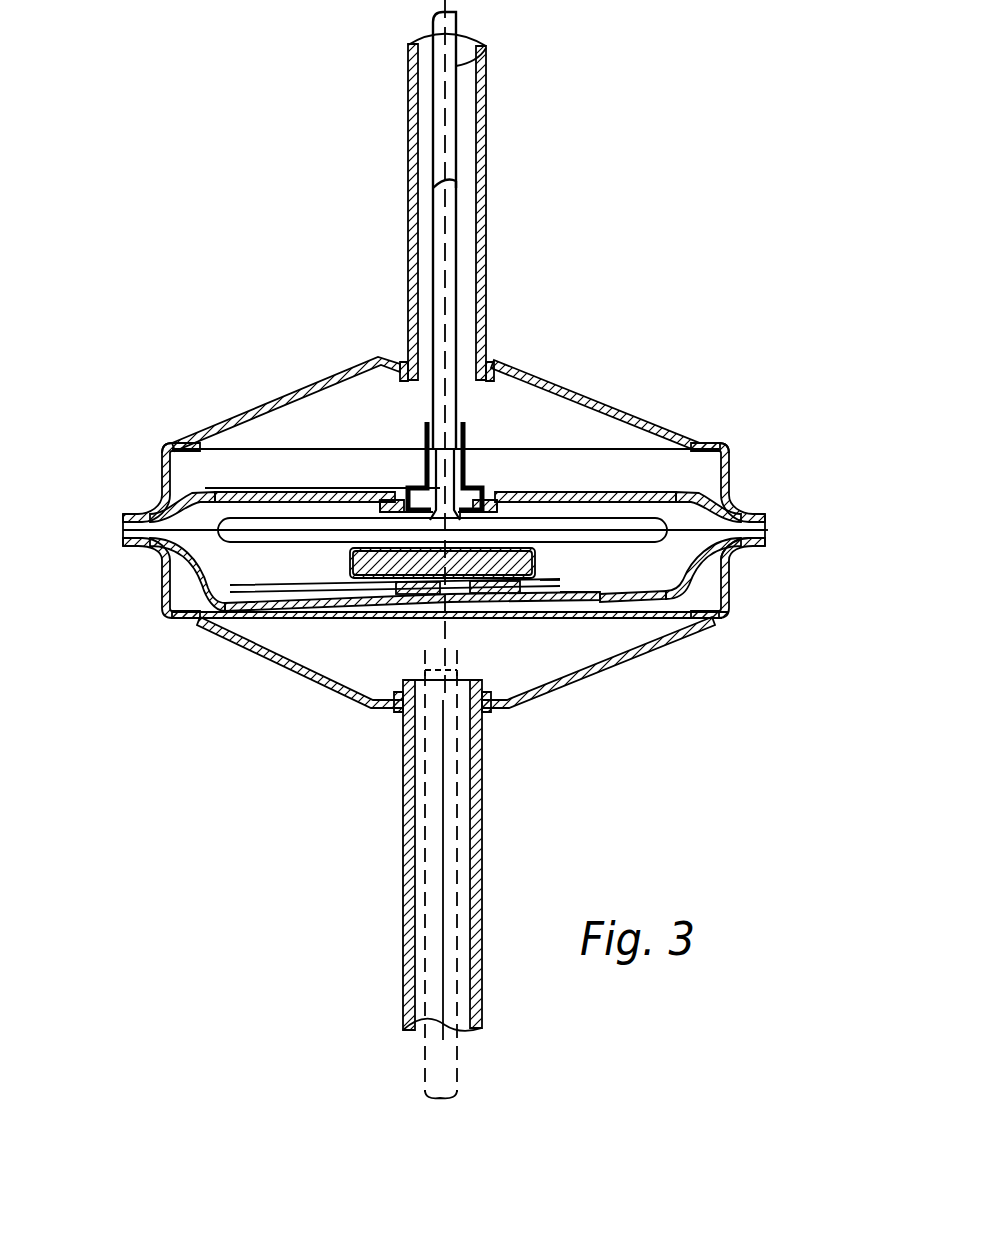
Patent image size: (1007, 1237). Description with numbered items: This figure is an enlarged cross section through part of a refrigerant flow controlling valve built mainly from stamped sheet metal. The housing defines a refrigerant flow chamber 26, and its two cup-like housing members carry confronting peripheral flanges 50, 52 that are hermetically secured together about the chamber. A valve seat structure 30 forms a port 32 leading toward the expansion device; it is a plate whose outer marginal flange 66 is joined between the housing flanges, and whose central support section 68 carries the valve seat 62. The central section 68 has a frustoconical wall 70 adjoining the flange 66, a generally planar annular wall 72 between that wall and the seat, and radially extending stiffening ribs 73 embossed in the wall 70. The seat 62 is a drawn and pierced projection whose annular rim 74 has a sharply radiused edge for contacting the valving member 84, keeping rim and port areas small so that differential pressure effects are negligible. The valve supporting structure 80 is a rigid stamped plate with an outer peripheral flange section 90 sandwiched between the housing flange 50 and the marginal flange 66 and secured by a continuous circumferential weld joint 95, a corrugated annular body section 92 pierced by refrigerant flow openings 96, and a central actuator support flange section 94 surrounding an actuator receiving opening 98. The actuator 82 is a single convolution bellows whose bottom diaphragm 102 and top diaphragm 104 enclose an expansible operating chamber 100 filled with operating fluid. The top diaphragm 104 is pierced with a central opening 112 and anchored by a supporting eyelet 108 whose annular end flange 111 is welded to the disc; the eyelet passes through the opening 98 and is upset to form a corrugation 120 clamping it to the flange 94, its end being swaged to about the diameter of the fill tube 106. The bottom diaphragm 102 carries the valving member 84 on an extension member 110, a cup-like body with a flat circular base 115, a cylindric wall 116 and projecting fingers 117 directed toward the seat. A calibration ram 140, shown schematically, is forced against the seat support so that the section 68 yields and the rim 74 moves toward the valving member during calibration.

The refrigerant flow chamber 26 is at (640, 462).
The valve seat structure 30 is at (685, 615).
The port 32 is at (437, 600).
The peripheral flange of first housing member 50 is at (760, 516).
The peripheral flange of second housing member 52 is at (752, 548).
The valve seat 62 is at (380, 586).
The outer marginal flange 66 is at (730, 572).
The central support section 68 is at (600, 594).
The frustoconical wall 70 is at (727, 608).
The planar annular wall 72 is at (620, 654).
The stiffening ribs 73 is at (303, 606).
The annular rim 74 is at (470, 590).
The valve supporting structure 80 is at (270, 482).
The actuator 82 is at (214, 510).
The valving member 84 is at (370, 520).
The outer peripheral flange section 90 is at (128, 514).
The annular body section 92 is at (586, 494).
The actuator support flange section 94 is at (496, 490).
The circumferential weld joint 95 is at (788, 540).
The refrigerant flow openings 96 is at (176, 450).
The actuator receiving opening 98 is at (418, 473).
The expansible operating chamber 100 is at (240, 525).
The bottom diaphragm 102 is at (227, 602).
The top diaphragm 104 is at (298, 492).
The fill tube 106 is at (437, 275).
The supporting eyelet 108 is at (392, 366).
The extension member 110 is at (528, 518).
The annular end flange 111 is at (403, 500).
The central opening 112 is at (468, 470).
The base 115 is at (575, 601).
The cylindric wall 116 is at (595, 601).
The projecting fingers 117 is at (552, 602).
The corrugation 120 is at (484, 498).
The calibration ram 140 is at (462, 1075).